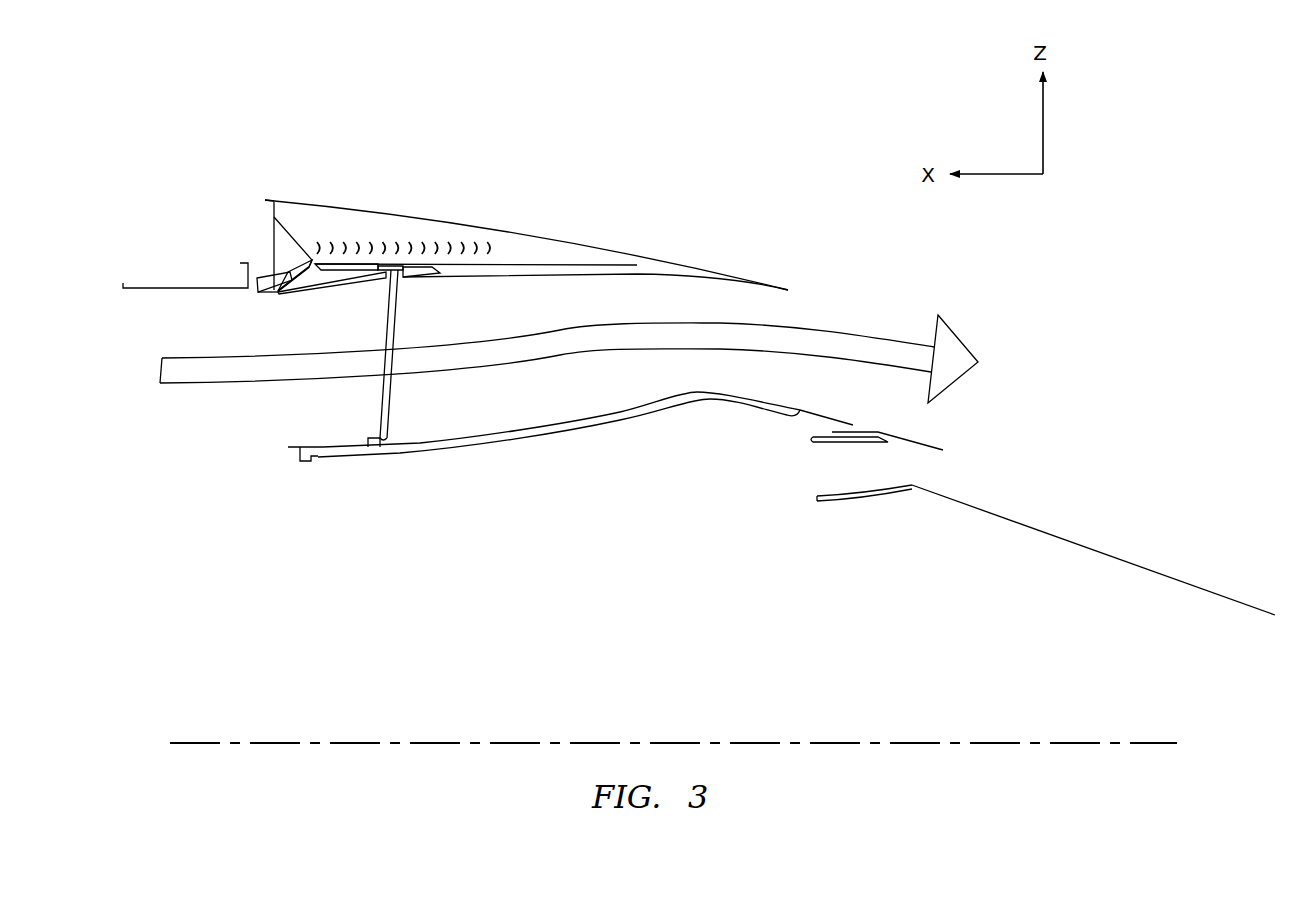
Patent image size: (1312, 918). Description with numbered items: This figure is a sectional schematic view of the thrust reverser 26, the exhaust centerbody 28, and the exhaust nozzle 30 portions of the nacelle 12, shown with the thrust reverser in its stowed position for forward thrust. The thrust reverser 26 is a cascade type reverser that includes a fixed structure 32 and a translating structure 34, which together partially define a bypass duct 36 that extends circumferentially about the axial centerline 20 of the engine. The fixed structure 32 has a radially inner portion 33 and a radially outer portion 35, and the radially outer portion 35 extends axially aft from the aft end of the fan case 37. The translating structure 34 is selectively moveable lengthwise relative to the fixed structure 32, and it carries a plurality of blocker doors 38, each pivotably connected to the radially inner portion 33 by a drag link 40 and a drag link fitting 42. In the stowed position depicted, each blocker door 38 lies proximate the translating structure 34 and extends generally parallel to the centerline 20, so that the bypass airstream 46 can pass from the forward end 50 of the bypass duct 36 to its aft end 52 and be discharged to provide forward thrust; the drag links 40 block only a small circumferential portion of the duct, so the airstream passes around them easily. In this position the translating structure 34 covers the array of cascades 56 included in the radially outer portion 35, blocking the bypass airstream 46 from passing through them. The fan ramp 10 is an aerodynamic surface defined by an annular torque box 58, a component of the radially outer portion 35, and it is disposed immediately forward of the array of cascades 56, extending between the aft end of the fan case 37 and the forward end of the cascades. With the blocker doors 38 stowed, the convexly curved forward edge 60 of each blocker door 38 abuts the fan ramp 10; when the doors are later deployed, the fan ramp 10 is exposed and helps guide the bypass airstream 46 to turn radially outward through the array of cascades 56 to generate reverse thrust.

The fan ramp 10 is at (288, 272).
The nacelle 12 is at (361, 131).
The axial centerline 20 is at (1080, 743).
The thrust reverser 26 is at (403, 137).
The exhaust centerbody 28 is at (1083, 542).
The exhaust nozzle 30 is at (927, 446).
The fixed structure 32 is at (279, 161).
The radially inner portion 33 is at (483, 468).
The translating structure 34 is at (569, 232).
The radially outer portion 35 is at (254, 186).
The bypass duct 36 is at (457, 311).
The fan case 37 is at (167, 282).
The blocker door 38 is at (310, 290).
The drag link 40 is at (392, 417).
The drag link fitting 42 is at (368, 443).
The bypass airstream 46 is at (217, 378).
The forward end 50 is at (199, 335).
The aft end 52 is at (635, 311).
The array of cascades 56 is at (394, 229).
The annular torque box 58 is at (296, 227).
The forward edge 60 is at (282, 299).